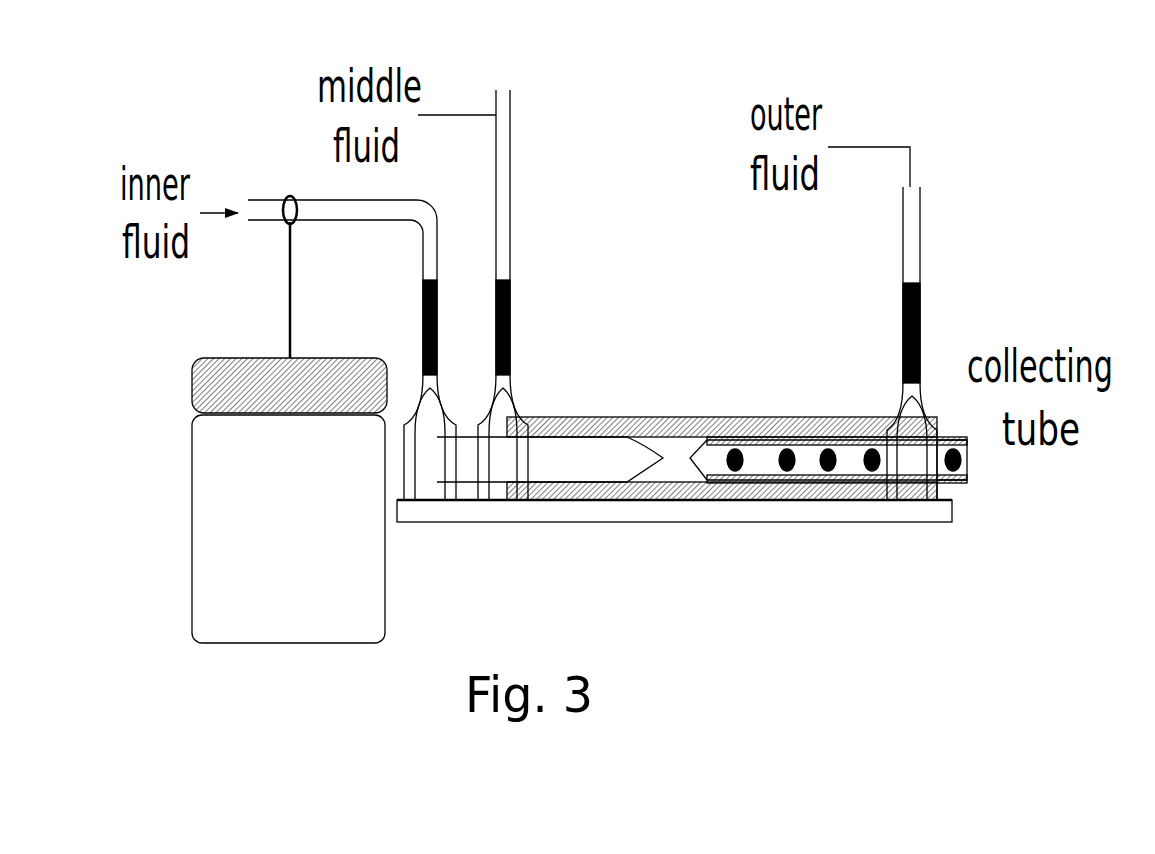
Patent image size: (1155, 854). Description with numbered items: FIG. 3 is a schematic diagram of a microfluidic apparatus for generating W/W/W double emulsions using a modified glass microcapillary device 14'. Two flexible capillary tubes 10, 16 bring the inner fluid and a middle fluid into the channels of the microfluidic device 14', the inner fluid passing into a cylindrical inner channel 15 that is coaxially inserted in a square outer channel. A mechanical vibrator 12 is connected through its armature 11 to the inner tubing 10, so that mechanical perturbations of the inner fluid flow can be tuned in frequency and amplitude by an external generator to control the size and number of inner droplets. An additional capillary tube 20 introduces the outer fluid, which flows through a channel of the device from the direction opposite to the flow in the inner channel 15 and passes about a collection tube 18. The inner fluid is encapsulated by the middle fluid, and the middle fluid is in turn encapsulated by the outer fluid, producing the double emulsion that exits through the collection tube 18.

The inner capillary tube 10 is at (305, 188).
The armature 11 is at (275, 320).
The mechanical vibrator 12 is at (197, 615).
The microfluidic device 14' is at (452, 350).
The inner channel 15 is at (563, 460).
The capillary tube 16 is at (520, 200).
The collection tube 18 is at (970, 462).
The capillary tube 20 is at (898, 255).